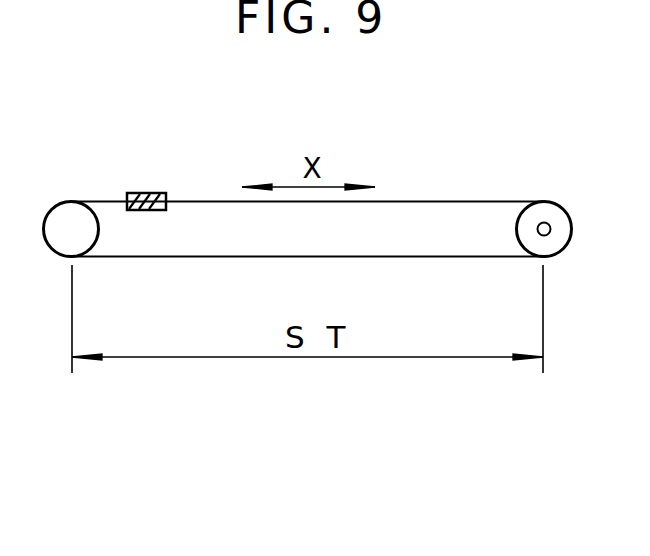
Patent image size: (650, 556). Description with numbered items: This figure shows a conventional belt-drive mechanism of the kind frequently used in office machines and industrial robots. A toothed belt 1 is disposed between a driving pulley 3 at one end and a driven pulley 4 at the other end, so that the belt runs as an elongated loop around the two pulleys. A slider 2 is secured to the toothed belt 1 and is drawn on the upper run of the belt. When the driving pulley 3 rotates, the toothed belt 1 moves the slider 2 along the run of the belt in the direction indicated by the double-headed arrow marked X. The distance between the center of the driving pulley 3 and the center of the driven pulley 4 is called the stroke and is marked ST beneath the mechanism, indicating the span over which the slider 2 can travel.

The toothed belt 1 is at (405, 201).
The slider 2 is at (148, 193).
The driving pulley 3 is at (543, 210).
The driven pulley 4 is at (68, 218).